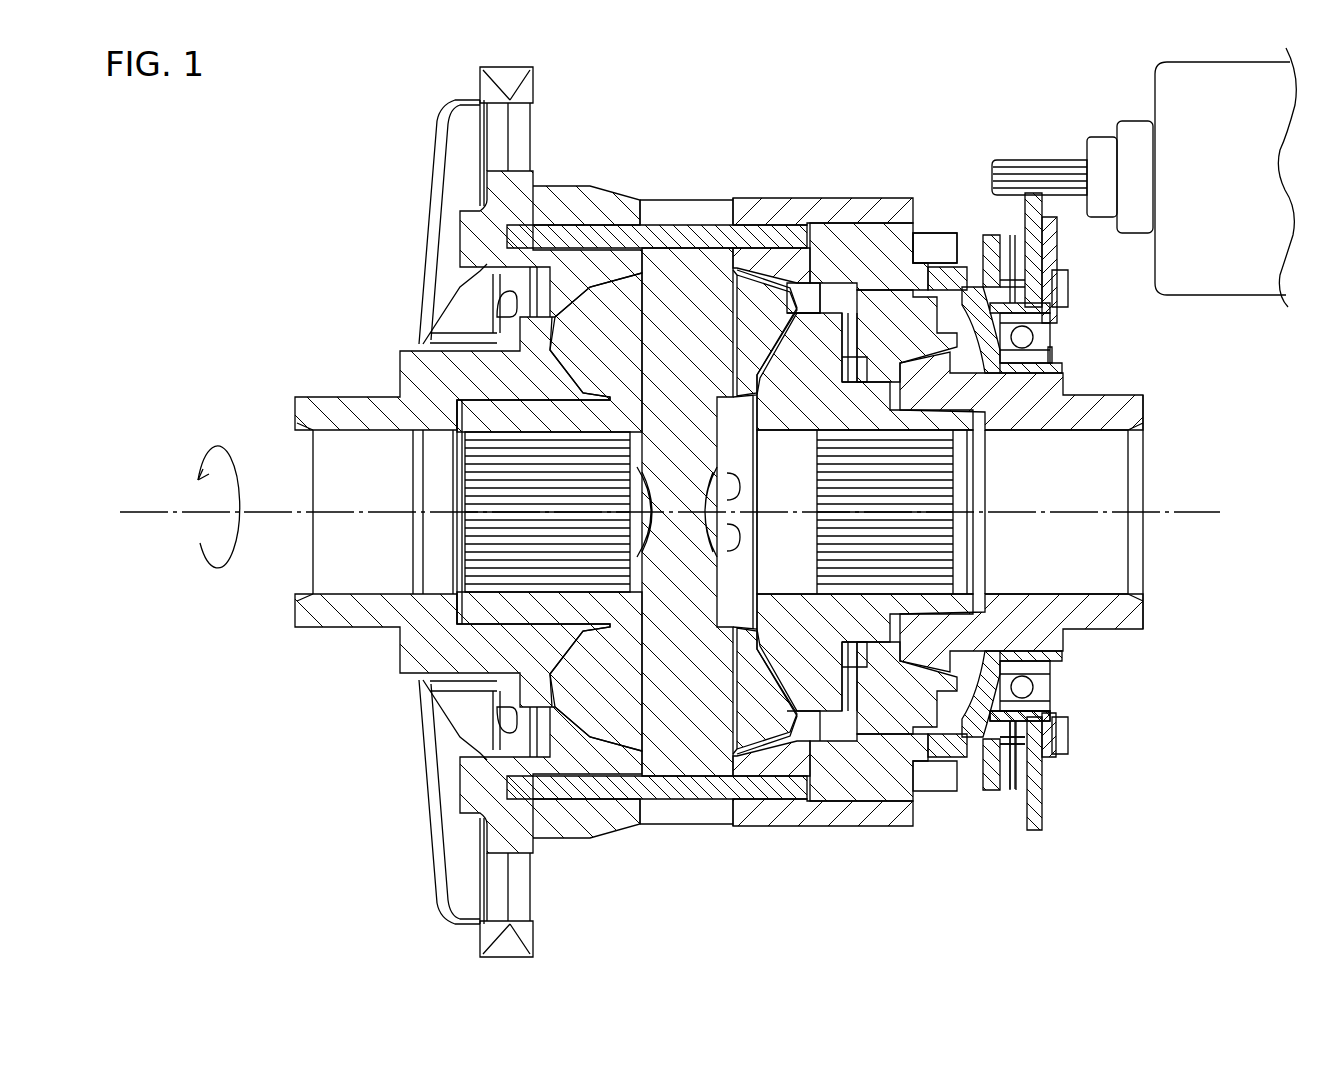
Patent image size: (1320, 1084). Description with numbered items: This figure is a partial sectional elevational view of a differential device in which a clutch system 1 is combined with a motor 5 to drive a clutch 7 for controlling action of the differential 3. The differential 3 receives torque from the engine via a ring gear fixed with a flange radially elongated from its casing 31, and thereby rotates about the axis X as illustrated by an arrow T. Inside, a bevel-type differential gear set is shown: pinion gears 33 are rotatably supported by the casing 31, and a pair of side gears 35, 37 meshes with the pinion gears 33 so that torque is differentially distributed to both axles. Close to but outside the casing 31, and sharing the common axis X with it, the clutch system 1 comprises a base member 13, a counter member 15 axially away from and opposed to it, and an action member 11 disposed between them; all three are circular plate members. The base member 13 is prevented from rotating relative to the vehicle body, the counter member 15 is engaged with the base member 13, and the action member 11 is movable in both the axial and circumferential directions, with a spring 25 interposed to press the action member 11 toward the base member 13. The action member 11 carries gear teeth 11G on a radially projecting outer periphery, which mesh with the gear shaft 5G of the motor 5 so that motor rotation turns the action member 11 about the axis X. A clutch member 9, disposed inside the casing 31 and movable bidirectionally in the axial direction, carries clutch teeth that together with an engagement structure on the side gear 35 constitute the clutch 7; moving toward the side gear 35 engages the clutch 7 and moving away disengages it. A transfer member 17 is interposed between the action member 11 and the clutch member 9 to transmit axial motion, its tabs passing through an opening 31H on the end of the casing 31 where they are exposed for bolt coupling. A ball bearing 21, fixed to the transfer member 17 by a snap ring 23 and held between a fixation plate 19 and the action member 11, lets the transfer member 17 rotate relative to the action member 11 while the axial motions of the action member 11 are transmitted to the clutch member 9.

The clutch system 1 is at (986, 139).
The differential 3 is at (685, 185).
The motor 5 is at (1222, 295).
The gear shaft 5G is at (1030, 160).
The clutch 7 is at (888, 143).
The clutch member 9 is at (868, 283).
The action member 11 is at (1044, 795).
The gear teeth 11G is at (1044, 203).
The base member 13 is at (1059, 238).
The counter member 15 is at (990, 792).
The transfer member 17 is at (1065, 372).
The fixation plate 19 is at (1050, 728).
The ball bearing 21 is at (1054, 336).
The snap ring 23 is at (1056, 358).
The spring 25 is at (1015, 793).
The casing 31 is at (593, 196).
The opening 31H is at (940, 250).
The pinion gears 33 is at (766, 268).
The side gear 35 is at (794, 300).
The side gear 37 is at (558, 282).
The arrow T is at (218, 456).
The axis X is at (155, 510).